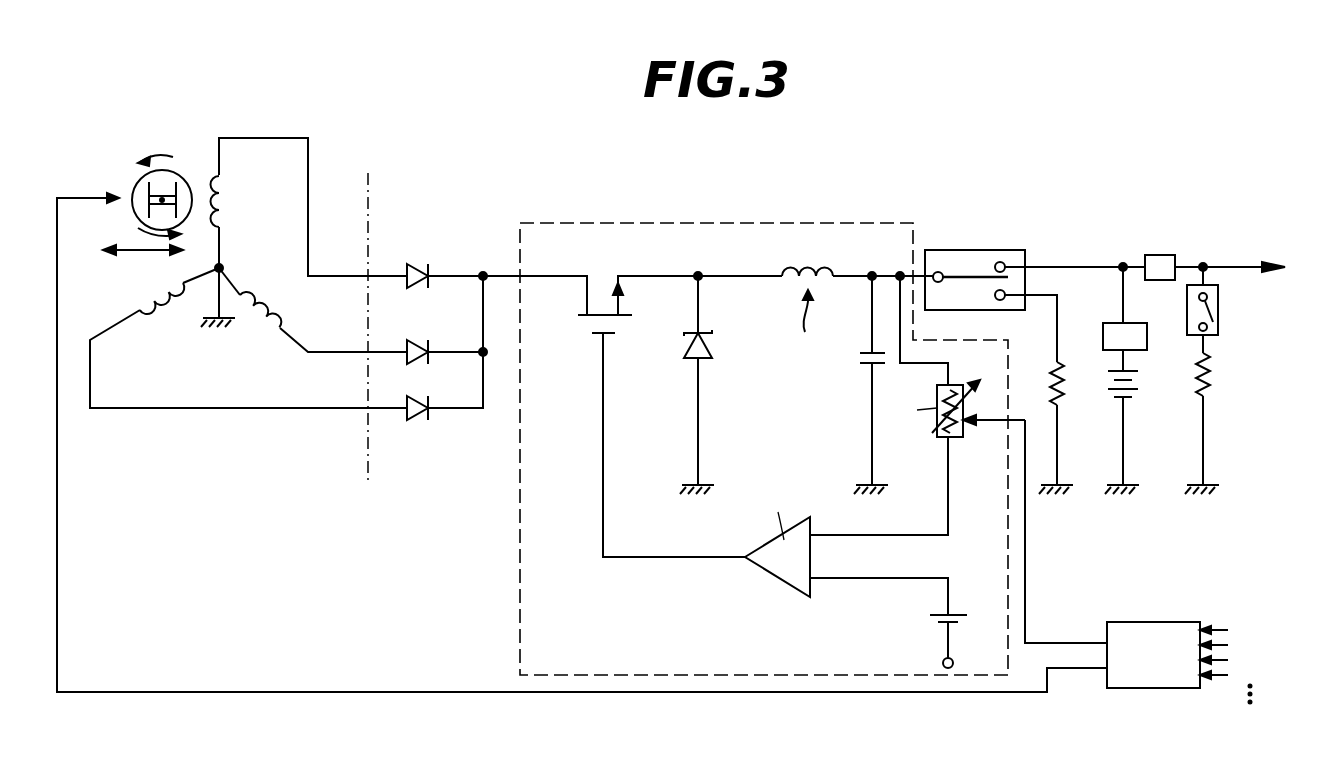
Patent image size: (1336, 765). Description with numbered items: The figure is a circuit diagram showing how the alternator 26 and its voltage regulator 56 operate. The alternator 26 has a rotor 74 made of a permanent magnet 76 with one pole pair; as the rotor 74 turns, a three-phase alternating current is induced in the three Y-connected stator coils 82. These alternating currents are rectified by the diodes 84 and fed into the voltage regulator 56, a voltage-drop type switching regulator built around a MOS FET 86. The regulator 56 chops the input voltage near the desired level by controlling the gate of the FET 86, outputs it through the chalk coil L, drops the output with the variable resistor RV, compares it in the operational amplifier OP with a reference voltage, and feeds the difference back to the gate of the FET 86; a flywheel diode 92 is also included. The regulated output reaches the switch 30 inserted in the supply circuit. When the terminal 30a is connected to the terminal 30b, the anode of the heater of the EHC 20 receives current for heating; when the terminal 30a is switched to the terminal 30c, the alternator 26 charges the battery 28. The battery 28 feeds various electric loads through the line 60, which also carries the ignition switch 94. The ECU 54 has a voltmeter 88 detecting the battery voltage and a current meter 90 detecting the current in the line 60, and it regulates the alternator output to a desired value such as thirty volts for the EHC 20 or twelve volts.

The rotor 74 is at (194, 166).
The permanent magnet 76 is at (191, 168).
The alternator 26 is at (264, 233).
The stator coil 82 is at (231, 208).
The diodes 84 is at (407, 345).
The voltage regulator 56 is at (540, 222).
The MOS FET 86 is at (582, 325).
The flywheel diode 92 is at (712, 355).
The switch 30 is at (999, 252).
The terminal 30a is at (945, 273).
The terminal 30b is at (1019, 318).
The terminal 30c is at (1004, 263).
The EHC 20 is at (1063, 383).
The voltmeter 88 is at (1112, 323).
The battery 28 is at (1140, 382).
The current meter 90 is at (1152, 255).
The line 60 is at (1232, 267).
The ignition switch 94 is at (1218, 323).
The ECU 54 is at (1143, 622).